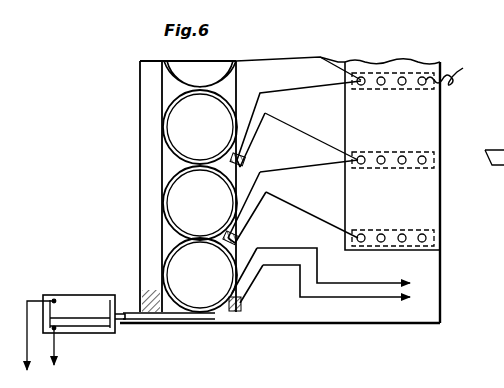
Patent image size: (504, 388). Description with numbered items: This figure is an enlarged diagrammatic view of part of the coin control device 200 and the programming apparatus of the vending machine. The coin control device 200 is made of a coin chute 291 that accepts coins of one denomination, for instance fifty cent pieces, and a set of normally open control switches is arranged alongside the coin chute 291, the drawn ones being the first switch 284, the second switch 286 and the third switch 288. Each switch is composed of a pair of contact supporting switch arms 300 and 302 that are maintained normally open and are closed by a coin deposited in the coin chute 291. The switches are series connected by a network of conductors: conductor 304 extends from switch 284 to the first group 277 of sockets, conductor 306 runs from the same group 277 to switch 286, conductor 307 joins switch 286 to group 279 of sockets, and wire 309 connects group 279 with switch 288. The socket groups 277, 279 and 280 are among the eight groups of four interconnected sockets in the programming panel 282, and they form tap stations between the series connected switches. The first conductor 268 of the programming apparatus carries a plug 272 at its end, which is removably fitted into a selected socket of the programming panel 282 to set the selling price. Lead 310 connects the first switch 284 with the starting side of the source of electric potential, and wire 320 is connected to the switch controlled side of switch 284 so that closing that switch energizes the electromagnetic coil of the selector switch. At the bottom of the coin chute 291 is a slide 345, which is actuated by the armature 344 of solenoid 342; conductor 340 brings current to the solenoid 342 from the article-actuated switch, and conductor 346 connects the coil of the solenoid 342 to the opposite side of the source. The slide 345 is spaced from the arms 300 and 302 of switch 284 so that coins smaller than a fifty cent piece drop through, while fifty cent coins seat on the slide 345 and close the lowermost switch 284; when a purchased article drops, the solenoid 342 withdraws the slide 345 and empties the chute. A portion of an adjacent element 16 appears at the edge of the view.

The container 16 is at (494, 145).
The coin control device 200 is at (140, 97).
The first conductor 268 is at (455, 66).
The plug 272 is at (420, 77).
The first group of sockets 277 is at (420, 234).
The group of sockets 279 is at (420, 156).
The group of sockets 280 is at (380, 78).
The programming panel 282 is at (432, 118).
The control switch 284 is at (255, 283).
The control switch 286 is at (238, 218).
The control switch 288 is at (238, 142).
The coin chute 291 is at (233, 64).
The switch arm 300 is at (242, 287).
The switch arm 302 is at (250, 305).
The conductor 304 is at (262, 208).
The conductor 306 is at (318, 216).
The conductor 307 is at (307, 168).
The wire 309 is at (311, 134).
The lead 310 is at (363, 298).
The wire 320 is at (388, 285).
The conductor 340 is at (56, 340).
The solenoid 342 is at (86, 304).
The armature 344 is at (121, 317).
The slide 345 is at (173, 314).
The conductor 346 is at (33, 300).